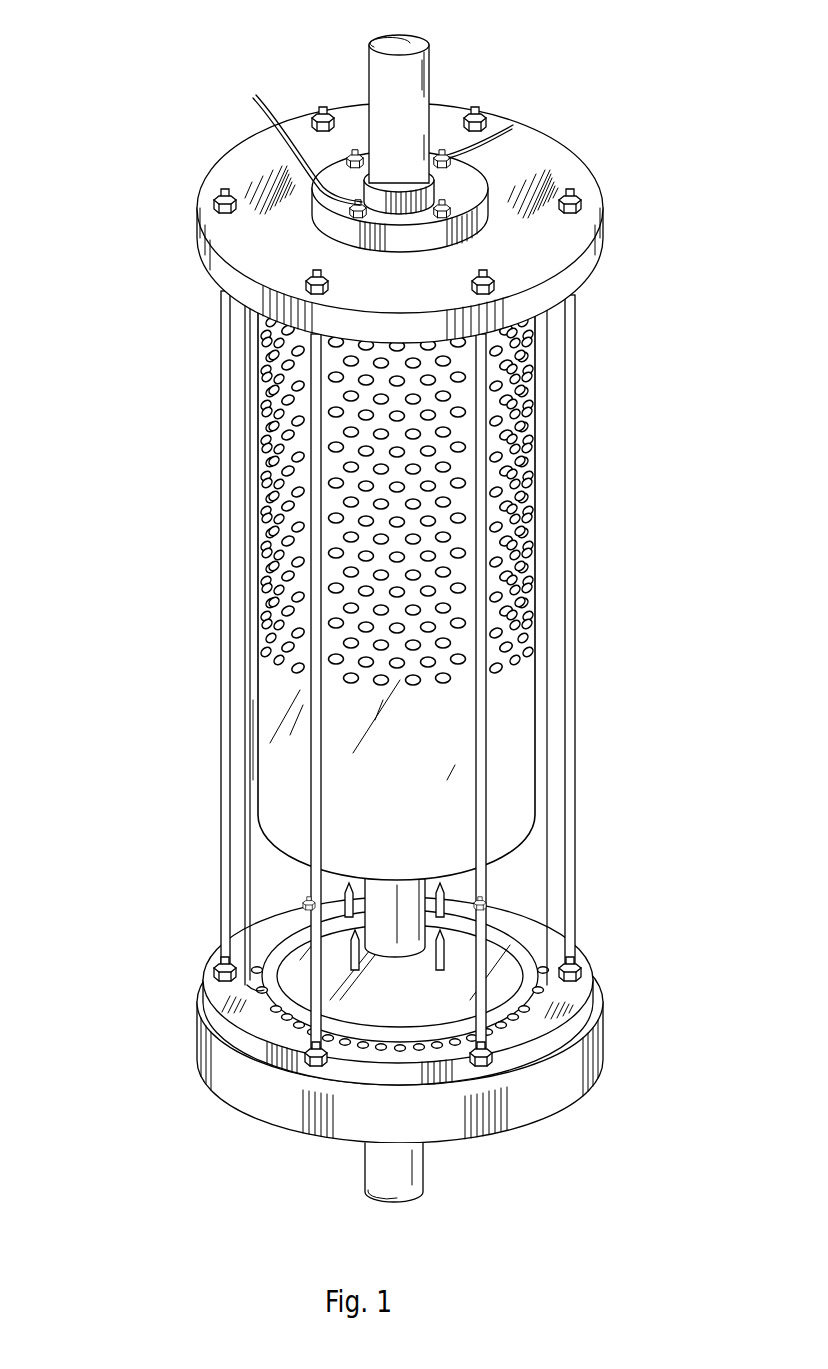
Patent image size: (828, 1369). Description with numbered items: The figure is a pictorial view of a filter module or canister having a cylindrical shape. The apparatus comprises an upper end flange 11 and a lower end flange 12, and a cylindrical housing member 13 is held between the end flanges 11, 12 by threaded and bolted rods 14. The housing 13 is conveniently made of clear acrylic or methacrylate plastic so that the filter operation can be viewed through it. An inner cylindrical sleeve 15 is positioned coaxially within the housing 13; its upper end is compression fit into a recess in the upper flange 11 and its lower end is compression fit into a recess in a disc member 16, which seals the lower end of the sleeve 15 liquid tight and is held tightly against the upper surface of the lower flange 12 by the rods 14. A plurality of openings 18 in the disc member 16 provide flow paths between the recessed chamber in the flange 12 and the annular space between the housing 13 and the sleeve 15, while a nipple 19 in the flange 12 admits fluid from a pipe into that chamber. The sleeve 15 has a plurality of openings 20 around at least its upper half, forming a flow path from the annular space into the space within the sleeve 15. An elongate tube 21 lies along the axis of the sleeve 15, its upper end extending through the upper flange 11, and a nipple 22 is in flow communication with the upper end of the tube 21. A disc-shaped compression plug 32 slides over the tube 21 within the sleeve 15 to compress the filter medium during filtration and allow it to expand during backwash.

The upper end flange 11 is at (225, 162).
The lower end flange 12 is at (240, 1080).
The cylindrical housing member 13 is at (248, 442).
The threaded and bolted rods 14 is at (575, 465).
The inner cylindrical sleeve 15 is at (515, 665).
The disc member 16 is at (378, 1090).
The openings 18 is at (285, 1010).
The nipple 19 is at (412, 1168).
The openings 20 is at (517, 467).
The elongate tube 21 is at (392, 950).
The nipple 22 is at (405, 87).
The compression plug 32 is at (258, 982).